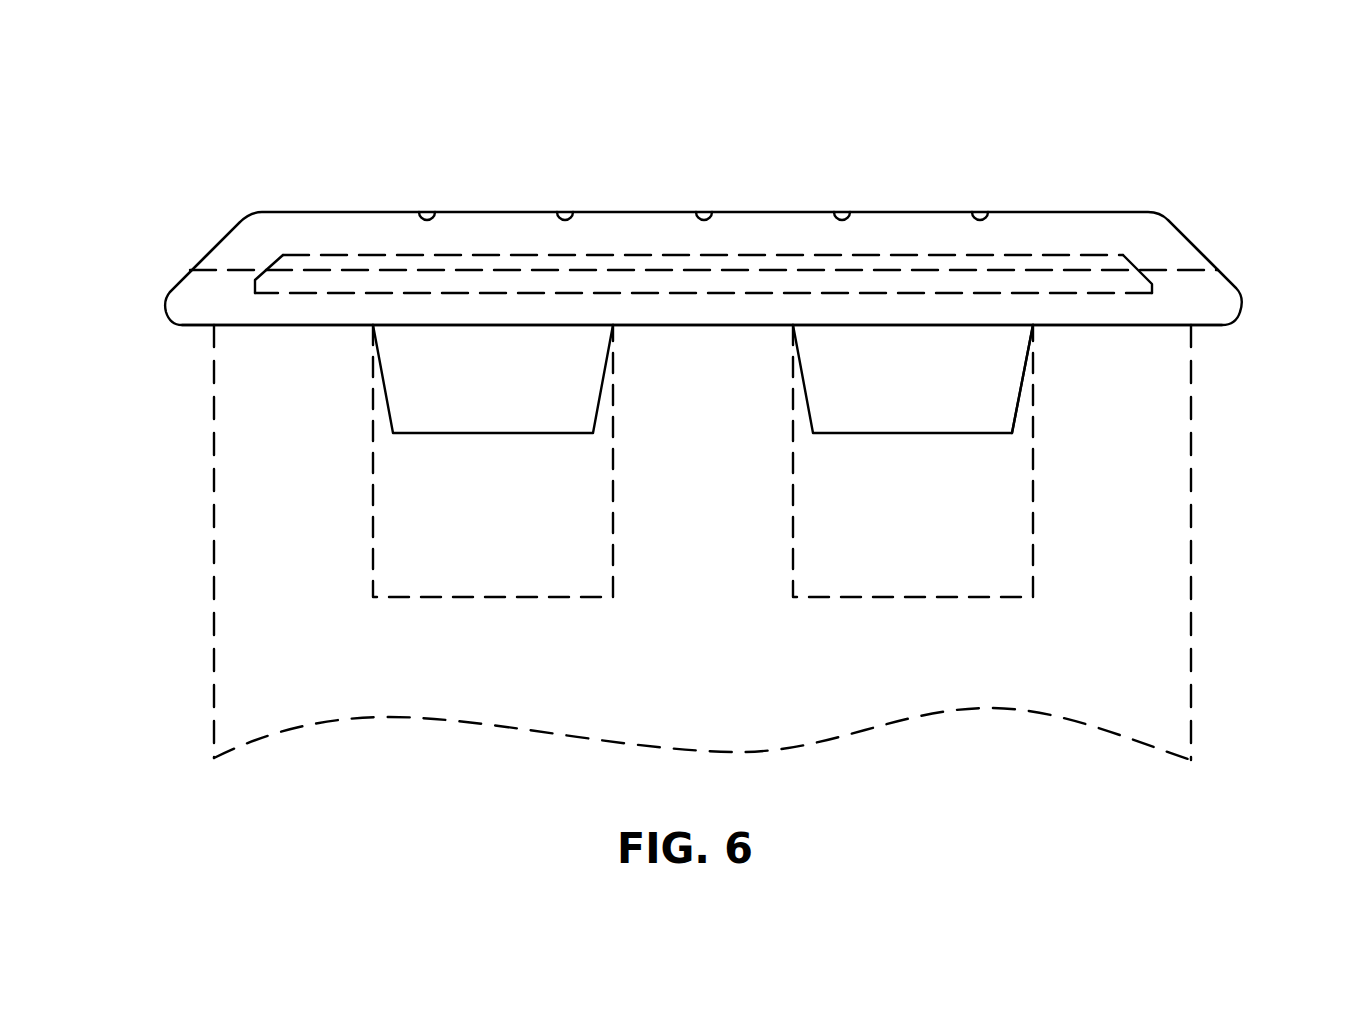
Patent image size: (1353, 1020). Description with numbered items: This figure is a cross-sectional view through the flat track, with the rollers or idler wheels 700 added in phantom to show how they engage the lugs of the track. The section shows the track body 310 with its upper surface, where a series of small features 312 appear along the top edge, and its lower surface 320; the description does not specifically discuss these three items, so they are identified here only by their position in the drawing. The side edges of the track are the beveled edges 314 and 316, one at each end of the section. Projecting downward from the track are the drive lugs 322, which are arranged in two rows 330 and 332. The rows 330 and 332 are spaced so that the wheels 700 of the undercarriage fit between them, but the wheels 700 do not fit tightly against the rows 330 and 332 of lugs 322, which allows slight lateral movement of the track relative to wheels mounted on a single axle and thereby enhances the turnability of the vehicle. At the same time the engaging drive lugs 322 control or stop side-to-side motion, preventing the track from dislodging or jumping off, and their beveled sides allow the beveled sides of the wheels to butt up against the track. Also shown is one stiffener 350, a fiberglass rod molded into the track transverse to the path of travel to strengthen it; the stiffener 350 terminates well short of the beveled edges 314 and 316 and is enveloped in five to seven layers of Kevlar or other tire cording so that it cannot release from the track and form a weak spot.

The base plate 310 is at (1065, 212).
The holes 312 is at (704, 215).
The beveled edge 314 is at (235, 252).
The beveled edge 316 is at (1178, 232).
The bottom surface 320 is at (1213, 330).
The drive lug 322 is at (992, 407).
The row of lugs 330 is at (915, 412).
The row of lugs 332 is at (490, 415).
The stiffener 350 is at (1108, 265).
The idler wheel 700 is at (233, 556).